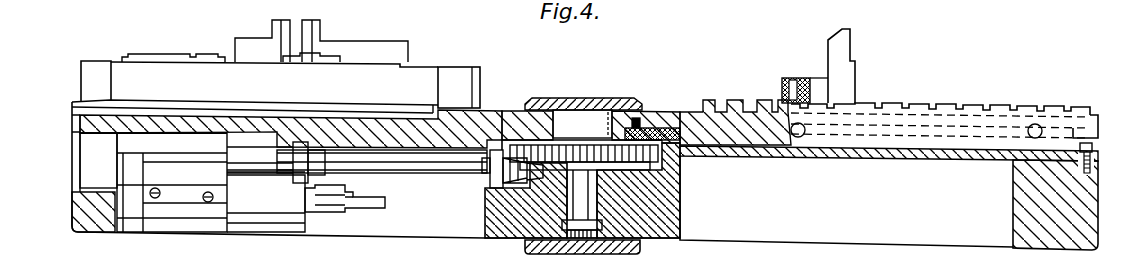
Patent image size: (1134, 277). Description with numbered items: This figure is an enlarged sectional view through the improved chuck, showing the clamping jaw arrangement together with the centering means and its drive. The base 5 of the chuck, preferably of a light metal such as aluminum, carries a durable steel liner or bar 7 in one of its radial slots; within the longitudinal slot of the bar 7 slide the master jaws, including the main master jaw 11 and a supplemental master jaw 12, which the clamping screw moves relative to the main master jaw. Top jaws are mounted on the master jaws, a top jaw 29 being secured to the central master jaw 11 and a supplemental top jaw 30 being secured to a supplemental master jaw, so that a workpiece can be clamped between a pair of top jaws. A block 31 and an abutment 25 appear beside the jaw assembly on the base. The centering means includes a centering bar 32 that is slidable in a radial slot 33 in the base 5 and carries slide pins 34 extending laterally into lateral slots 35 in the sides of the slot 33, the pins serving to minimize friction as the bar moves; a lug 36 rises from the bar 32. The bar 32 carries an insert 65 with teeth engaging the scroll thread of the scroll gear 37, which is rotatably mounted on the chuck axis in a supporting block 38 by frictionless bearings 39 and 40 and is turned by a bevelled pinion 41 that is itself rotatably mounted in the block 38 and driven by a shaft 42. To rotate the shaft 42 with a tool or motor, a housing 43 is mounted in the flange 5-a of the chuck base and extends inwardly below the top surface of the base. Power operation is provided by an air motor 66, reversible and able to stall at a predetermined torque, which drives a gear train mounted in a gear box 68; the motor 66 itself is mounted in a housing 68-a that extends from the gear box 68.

The base 5 is at (505, 110).
The flange 5-a is at (89, 225).
The liner, or bar 7 is at (284, 93).
The main master jaw 11 is at (306, 63).
The supplemental master jaw 12 is at (160, 57).
The abutment block 25 is at (96, 64).
The top jaw 29 is at (255, 40).
The supplemental top jaw 30 is at (355, 41).
The block 31 is at (480, 78).
The centering bar 32 is at (918, 112).
The radial slot 33 is at (1096, 118).
The slide pin 34 is at (993, 163).
The lateral slot 35 is at (1099, 137).
The lug 36 is at (856, 72).
The scroll gear 37 is at (684, 163).
The supporting block 38 is at (680, 218).
The frictionless bearing 39 is at (678, 181).
The frictionless bearing 40 is at (658, 243).
The bevelled pinion 41 is at (500, 188).
The shaft 42 is at (407, 172).
The housing 43 is at (82, 165).
The insert 65 is at (655, 110).
The air motor 66 is at (325, 216).
The gear box 68 is at (134, 218).
The housing 68-a is at (258, 212).